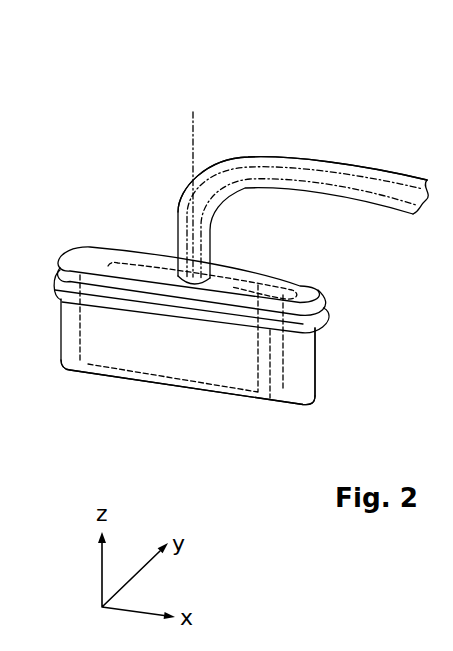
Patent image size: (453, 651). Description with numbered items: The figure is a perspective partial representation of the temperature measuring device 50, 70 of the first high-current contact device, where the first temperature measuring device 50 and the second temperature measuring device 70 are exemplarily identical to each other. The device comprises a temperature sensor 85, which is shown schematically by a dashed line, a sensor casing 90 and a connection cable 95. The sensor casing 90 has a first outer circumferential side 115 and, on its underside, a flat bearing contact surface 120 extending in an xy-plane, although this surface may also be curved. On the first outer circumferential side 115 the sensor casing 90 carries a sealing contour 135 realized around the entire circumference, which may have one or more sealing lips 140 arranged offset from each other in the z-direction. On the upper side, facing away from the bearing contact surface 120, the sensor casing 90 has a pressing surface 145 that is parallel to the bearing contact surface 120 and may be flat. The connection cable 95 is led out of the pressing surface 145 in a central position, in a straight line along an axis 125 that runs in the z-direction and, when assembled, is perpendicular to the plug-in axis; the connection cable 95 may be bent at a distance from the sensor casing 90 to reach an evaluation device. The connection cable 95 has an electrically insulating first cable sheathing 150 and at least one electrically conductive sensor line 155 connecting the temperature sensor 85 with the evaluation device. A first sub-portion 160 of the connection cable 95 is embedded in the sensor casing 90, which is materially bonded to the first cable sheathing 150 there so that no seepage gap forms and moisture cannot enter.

The first temperature measuring device 50 is at (295, 175).
The second temperature measuring device 70 is at (256, 138).
The temperature sensor 85 is at (247, 373).
The sensor casing 90 is at (300, 398).
The connection cable 95 is at (347, 168).
The first outer circumferential side 115 is at (324, 360).
The bearing contact surface 120 is at (105, 388).
The axis 125 is at (192, 148).
The sealing contour 135 is at (340, 302).
The sealing lips 140 is at (214, 306).
The pressing surface 145 is at (289, 279).
The first cable sheathing 150 is at (308, 161).
The sensor line 155 is at (385, 187).
The first sub-portion 160 is at (210, 284).